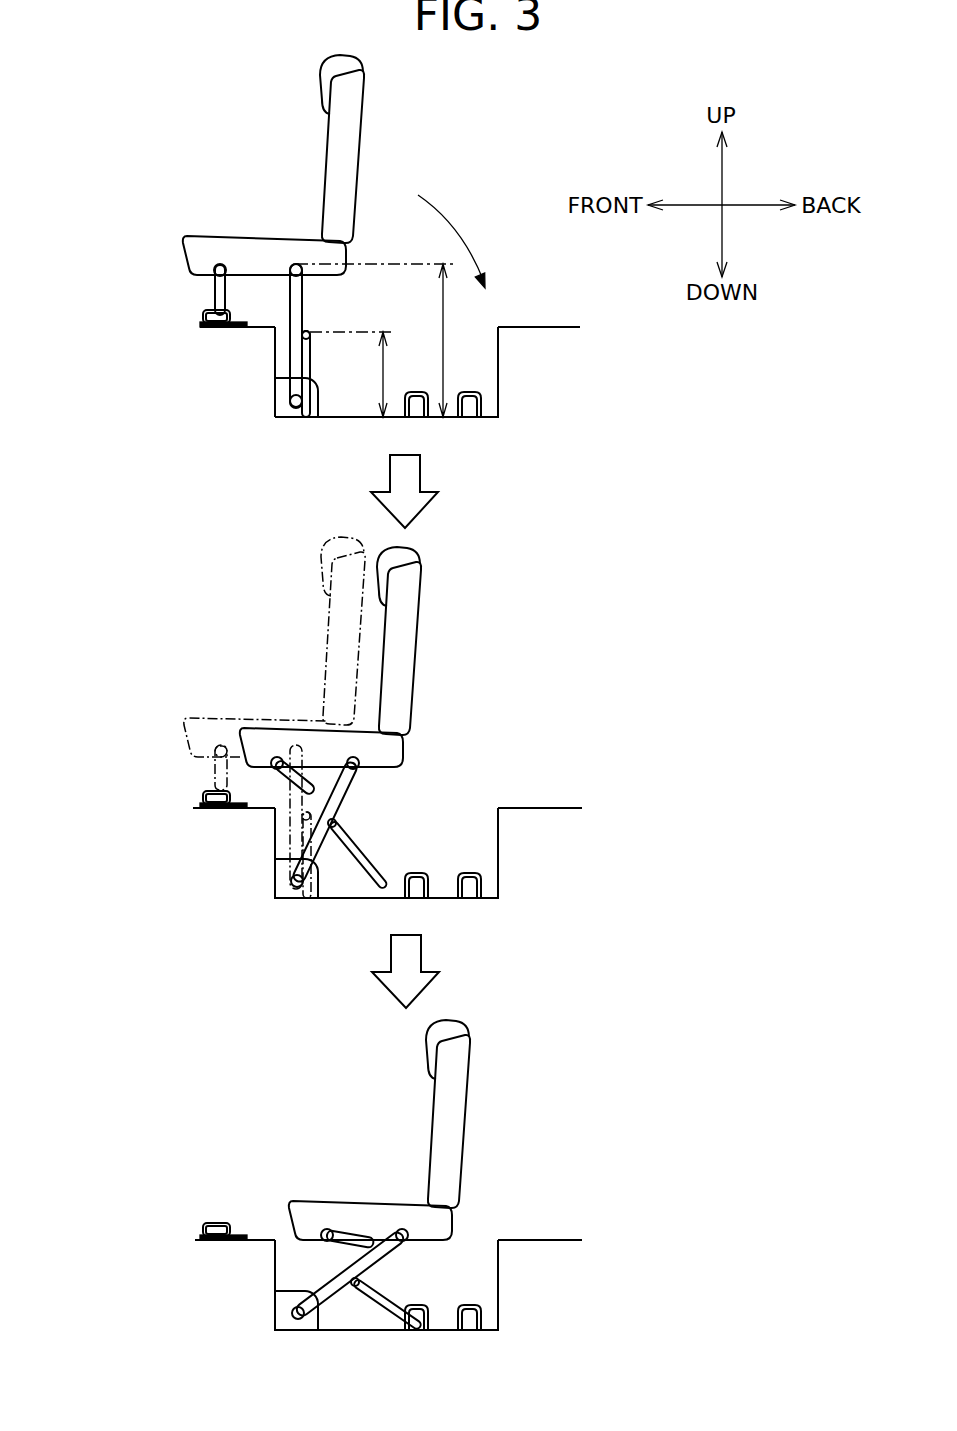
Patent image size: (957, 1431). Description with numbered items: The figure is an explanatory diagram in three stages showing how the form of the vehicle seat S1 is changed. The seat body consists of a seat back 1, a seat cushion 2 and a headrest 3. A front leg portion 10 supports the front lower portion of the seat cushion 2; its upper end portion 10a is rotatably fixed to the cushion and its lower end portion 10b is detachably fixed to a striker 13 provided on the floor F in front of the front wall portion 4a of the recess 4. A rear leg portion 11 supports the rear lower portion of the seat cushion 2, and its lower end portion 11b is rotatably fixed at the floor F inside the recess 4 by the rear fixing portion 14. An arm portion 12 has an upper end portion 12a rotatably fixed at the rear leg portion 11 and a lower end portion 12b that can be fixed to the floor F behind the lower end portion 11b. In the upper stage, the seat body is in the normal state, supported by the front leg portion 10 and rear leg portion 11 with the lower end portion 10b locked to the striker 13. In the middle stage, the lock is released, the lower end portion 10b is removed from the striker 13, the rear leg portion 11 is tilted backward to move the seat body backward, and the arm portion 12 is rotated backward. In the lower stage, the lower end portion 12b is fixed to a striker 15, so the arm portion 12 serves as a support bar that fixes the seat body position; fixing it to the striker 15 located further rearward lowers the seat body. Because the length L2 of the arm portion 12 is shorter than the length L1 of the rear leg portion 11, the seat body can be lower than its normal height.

The vehicle seat S1 is at (177, 121).
The seat back 1 is at (335, 162).
The seat cushion 2 is at (216, 236).
The headrest 3 is at (328, 60).
The recess 4 is at (474, 1246).
The front wall portion 4a is at (268, 358).
The floor F is at (543, 328).
The front leg portion 10 is at (220, 300).
The upper end portion 10a is at (217, 262).
The lower end portion 10b is at (202, 326).
The rear leg portion 11 is at (293, 298).
The lower end portion 11b is at (292, 407).
The arm portion 12 is at (307, 363).
The upper end portion 12a is at (307, 333).
The lower end portion 12b is at (308, 420).
The striker 13 is at (230, 330).
The rear fixing portion 14 is at (282, 385).
The striker 15 is at (470, 390).
The length of the rear leg portion L1 is at (385, 340).
The length of the arm portion L2 is at (363, 374).